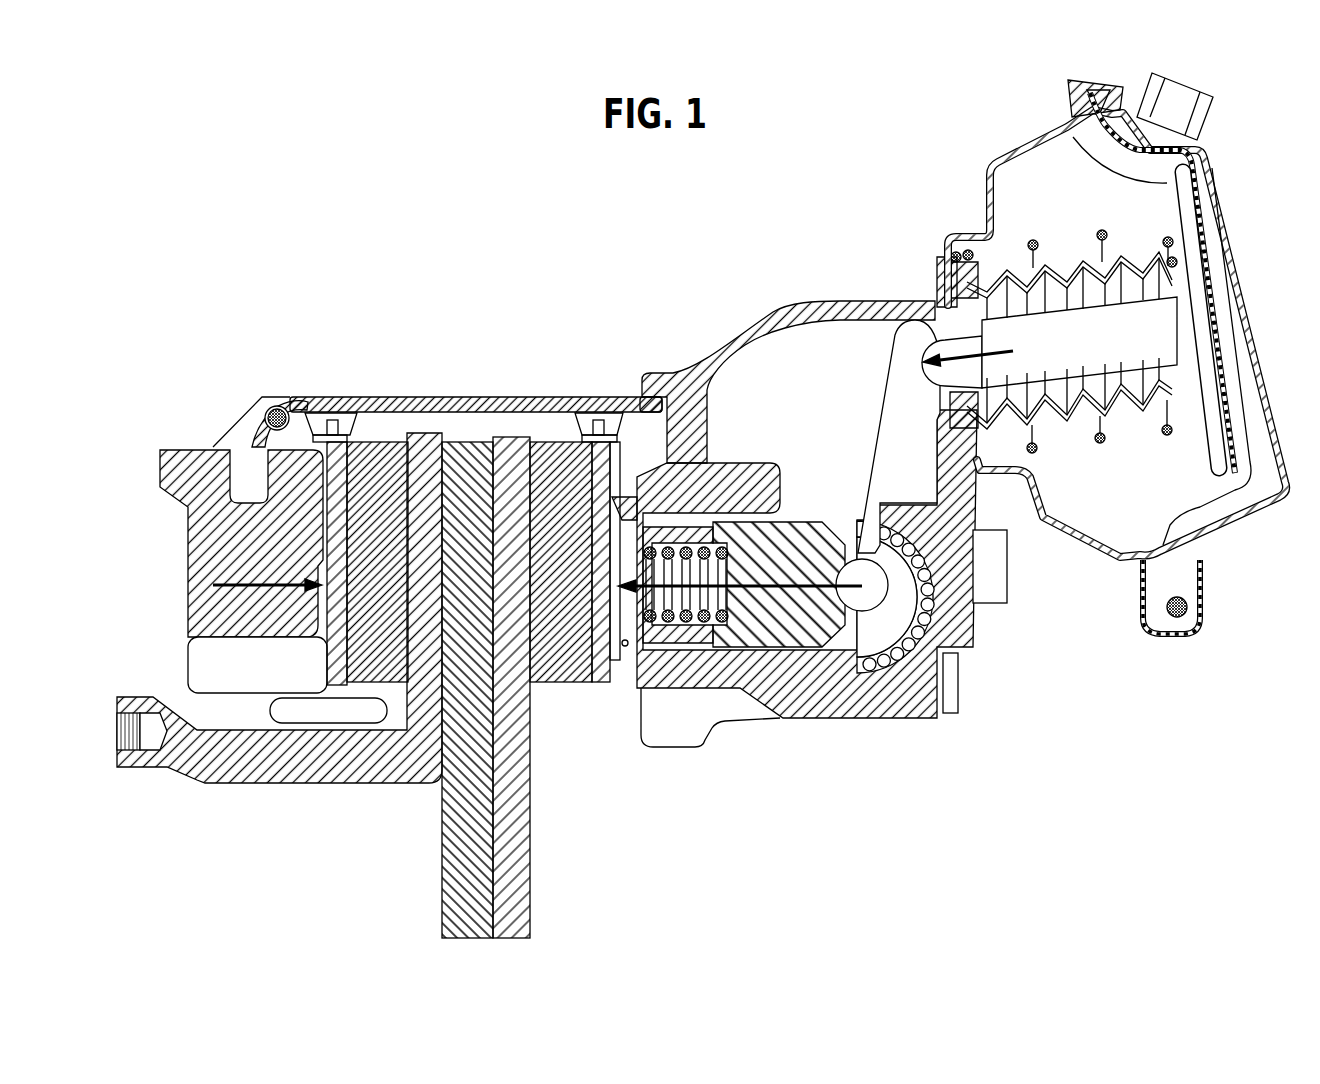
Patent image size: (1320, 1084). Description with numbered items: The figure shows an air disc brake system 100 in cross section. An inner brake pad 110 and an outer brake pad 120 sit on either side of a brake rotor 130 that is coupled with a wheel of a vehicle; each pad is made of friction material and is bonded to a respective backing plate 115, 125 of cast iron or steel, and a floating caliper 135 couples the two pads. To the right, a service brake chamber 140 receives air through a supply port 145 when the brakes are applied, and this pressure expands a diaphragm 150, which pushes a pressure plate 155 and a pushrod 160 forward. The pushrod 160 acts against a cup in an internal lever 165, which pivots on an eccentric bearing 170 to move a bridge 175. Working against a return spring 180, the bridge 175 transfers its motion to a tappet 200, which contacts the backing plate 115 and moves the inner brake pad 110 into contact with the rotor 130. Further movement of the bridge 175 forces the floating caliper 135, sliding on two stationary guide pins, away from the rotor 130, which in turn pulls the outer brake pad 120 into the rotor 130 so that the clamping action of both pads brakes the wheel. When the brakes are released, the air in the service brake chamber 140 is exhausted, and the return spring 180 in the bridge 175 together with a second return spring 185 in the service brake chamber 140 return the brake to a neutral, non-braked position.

The air disc brake system 100 is at (212, 323).
The inner brake pad 110 is at (548, 440).
The backing plate 115 is at (648, 411).
The outer brake pad 120 is at (385, 440).
The backing plate 125 is at (264, 440).
The brake rotor 130 is at (452, 867).
The floating caliper 135 is at (470, 397).
The service brake chamber 140 is at (1025, 177).
The supply port 145 is at (1183, 92).
The diaphragm 150 is at (1222, 503).
The pressure plate 155 is at (1090, 125).
The pushrod 160 is at (1007, 273).
The internal lever 165 is at (887, 367).
The eccentric bearing 170 is at (915, 660).
The bridge 175 is at (790, 655).
The return spring 180 is at (643, 600).
The return spring 185 is at (1100, 450).
The tappet 200 is at (637, 478).